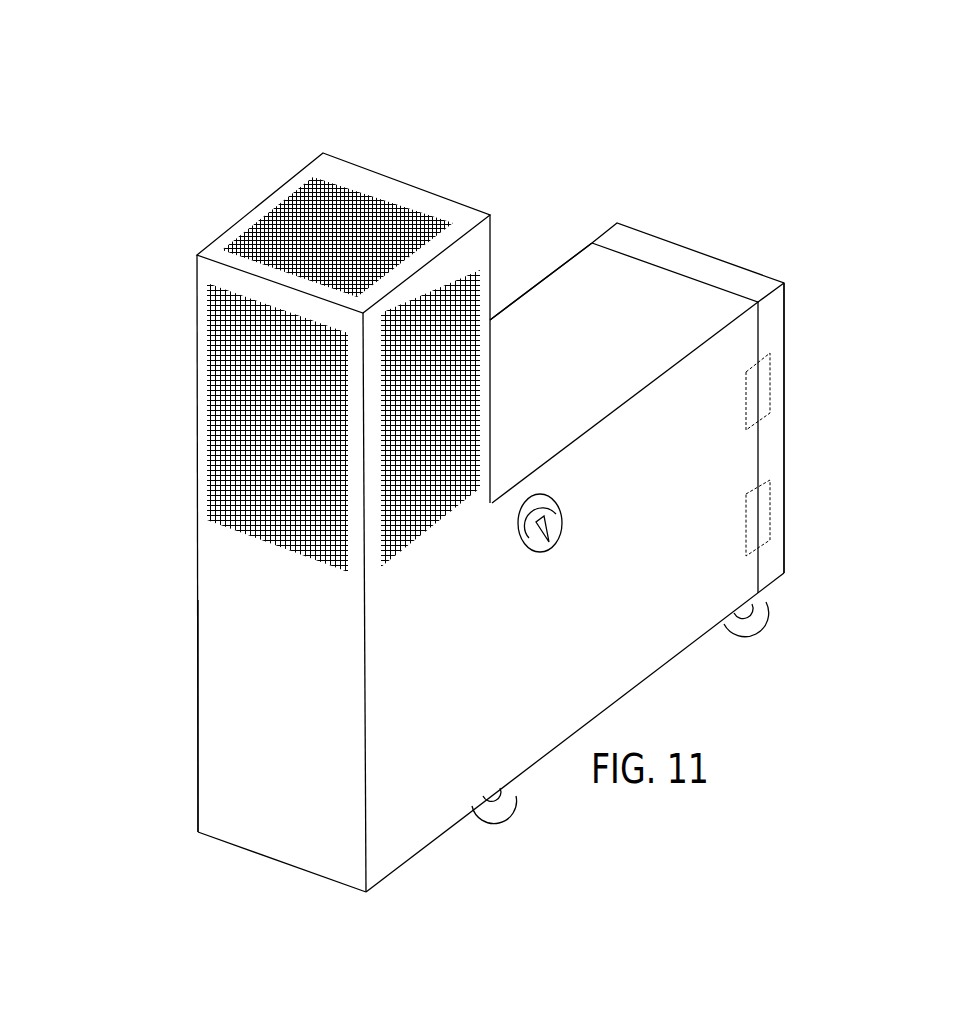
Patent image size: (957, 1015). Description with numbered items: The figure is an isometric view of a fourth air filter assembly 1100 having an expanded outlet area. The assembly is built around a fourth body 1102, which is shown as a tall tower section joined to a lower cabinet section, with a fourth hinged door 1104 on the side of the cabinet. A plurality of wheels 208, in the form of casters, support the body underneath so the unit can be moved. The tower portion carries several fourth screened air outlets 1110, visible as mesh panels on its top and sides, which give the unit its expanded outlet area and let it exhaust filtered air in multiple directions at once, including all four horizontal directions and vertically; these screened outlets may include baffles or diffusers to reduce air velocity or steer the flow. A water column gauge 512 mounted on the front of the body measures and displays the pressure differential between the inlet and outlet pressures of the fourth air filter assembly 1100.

The fourth air filter assembly 1100 is at (369, 150).
The fourth screened air outlets 1110 is at (410, 442).
The fourth body 1102 is at (540, 351).
The fourth hinged door 1104 is at (770, 433).
The water column gauge 512 is at (550, 546).
The wheels (casters) 208 is at (492, 815).